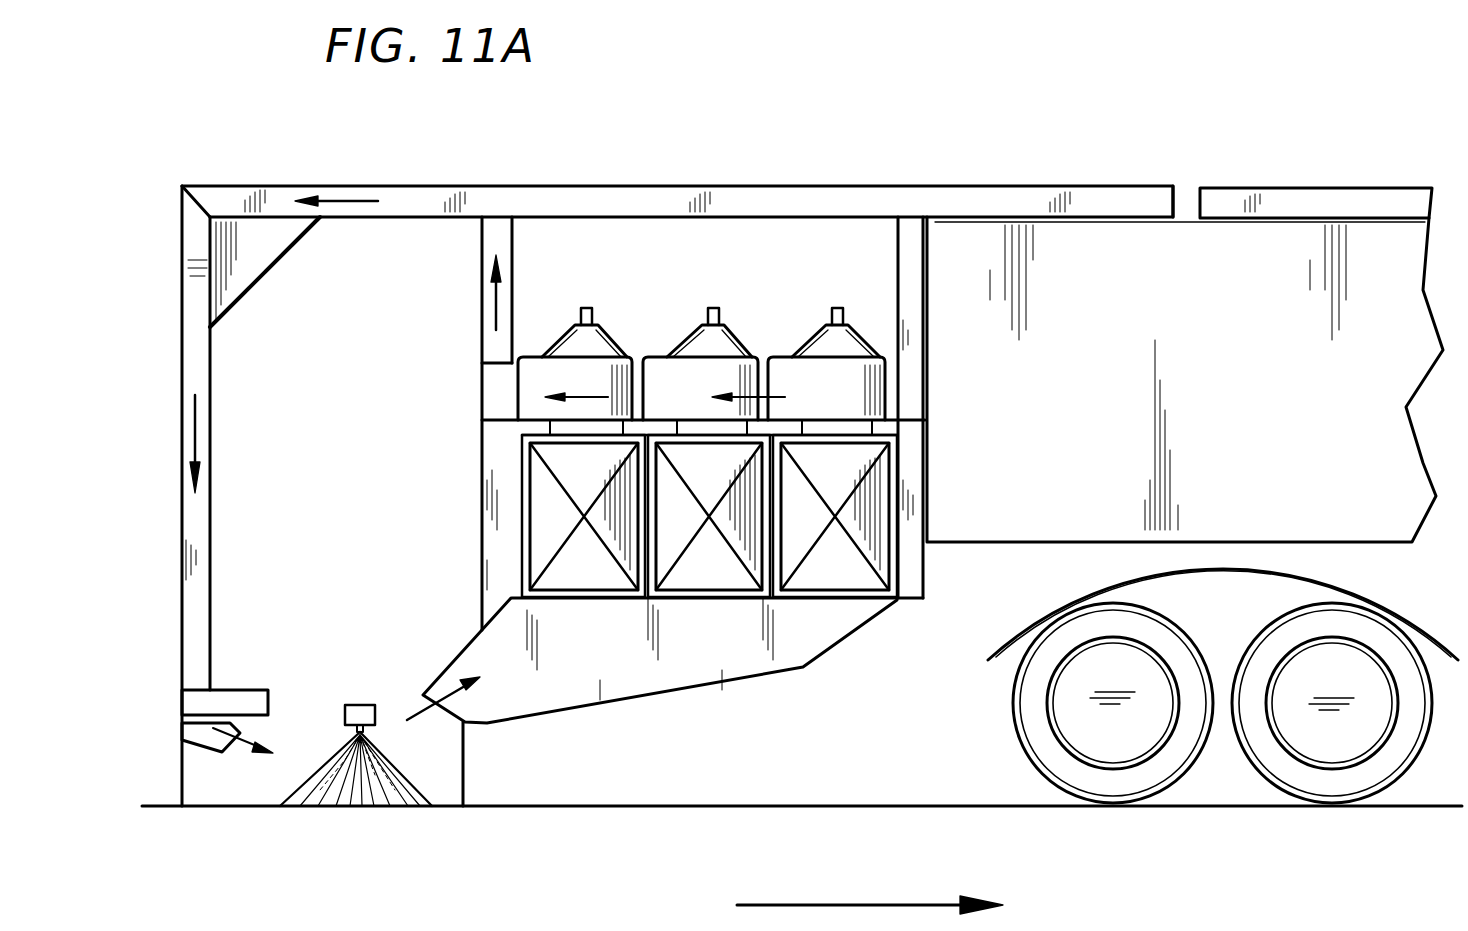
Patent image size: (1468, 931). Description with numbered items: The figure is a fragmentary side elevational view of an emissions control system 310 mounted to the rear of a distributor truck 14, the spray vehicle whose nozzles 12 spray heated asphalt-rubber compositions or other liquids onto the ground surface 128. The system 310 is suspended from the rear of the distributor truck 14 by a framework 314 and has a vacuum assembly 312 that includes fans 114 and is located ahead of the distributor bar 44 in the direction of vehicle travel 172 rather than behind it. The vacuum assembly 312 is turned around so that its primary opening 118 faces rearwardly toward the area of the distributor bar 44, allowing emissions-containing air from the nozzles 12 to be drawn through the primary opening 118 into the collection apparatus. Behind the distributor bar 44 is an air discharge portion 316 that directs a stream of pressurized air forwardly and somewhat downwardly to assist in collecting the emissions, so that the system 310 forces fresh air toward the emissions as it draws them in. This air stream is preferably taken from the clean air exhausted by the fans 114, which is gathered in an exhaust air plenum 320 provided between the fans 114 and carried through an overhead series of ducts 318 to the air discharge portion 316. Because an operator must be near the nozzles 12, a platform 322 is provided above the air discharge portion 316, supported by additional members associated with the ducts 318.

The system 310 is at (833, 73).
The vacuum assembly 312 is at (697, 307).
The framework 314 is at (905, 242).
The ducts 318 is at (213, 195).
The exhaust air plenum 320 is at (520, 372).
The platform 322 is at (243, 690).
The air discharge portion 316 is at (205, 747).
The fans 114 is at (577, 333).
The primary opening 118 is at (418, 697).
The distributor bar 44 is at (360, 705).
The nozzles 12 is at (350, 735).
The distributor truck 14 is at (1230, 198).
The ground surface 128 is at (857, 805).
The direction of travel 172 is at (827, 905).